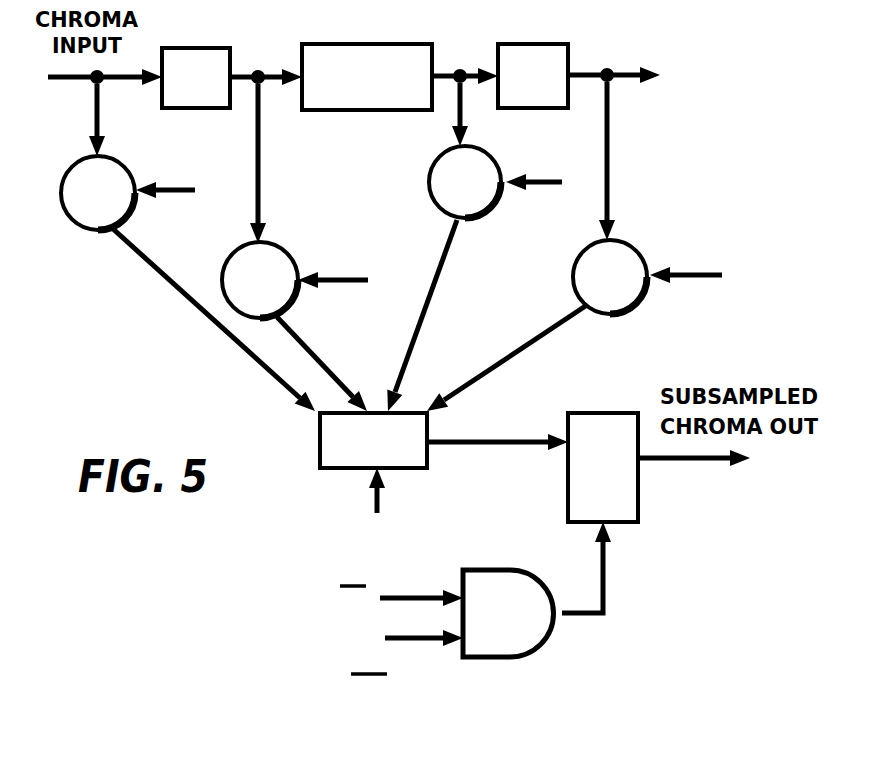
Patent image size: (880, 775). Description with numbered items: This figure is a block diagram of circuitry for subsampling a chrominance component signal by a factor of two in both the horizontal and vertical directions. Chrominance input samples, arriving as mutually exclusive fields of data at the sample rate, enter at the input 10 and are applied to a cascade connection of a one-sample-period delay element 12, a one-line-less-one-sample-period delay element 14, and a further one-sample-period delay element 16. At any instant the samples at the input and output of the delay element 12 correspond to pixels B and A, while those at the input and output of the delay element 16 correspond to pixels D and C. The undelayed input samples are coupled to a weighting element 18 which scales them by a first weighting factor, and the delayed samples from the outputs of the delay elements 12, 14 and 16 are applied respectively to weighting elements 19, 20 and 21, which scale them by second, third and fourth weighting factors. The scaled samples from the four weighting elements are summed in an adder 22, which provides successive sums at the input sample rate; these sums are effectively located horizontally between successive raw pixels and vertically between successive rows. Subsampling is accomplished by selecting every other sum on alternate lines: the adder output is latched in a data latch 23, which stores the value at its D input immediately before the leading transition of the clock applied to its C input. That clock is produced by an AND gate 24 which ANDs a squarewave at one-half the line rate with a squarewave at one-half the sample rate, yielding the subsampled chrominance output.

The chrominance input 10 is at (54, 79).
The one-sample-period delay element 12 is at (213, 48).
The one-line-less-one-sample-period delay element 14 is at (387, 44).
The further one-sample-period delay element 16 is at (553, 44).
The weighting element 18 is at (72, 165).
The weighting element 19 is at (232, 262).
The weighting element 20 is at (430, 183).
The weighting element 21 is at (576, 289).
The adder 22 is at (320, 446).
The data latch 23 is at (568, 511).
The AND gate 24 is at (483, 567).